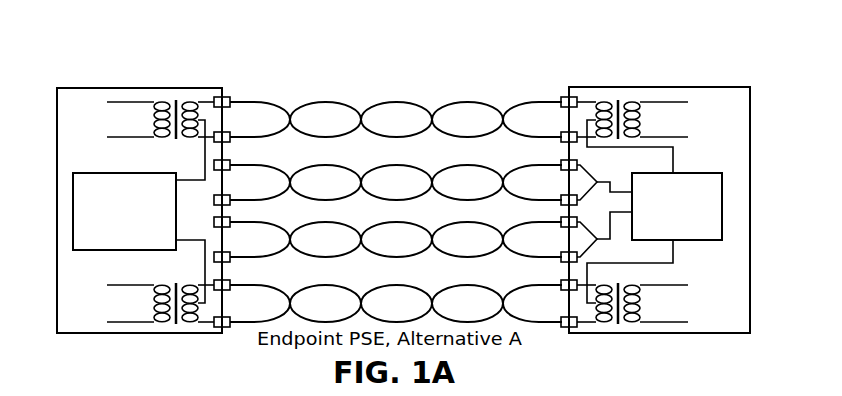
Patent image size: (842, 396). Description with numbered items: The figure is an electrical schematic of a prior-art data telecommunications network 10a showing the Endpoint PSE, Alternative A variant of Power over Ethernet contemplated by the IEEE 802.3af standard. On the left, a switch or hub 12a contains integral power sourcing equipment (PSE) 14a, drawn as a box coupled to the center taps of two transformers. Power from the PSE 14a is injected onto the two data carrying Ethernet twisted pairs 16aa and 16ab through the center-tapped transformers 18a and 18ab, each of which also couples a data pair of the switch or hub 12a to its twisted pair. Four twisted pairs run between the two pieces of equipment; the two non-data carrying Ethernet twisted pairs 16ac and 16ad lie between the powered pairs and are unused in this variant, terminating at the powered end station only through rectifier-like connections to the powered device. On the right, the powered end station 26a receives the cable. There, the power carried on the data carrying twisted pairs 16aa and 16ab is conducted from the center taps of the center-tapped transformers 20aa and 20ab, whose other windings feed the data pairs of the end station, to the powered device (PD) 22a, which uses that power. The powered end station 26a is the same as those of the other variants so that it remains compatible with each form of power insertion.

The data telecommunications network 10a is at (467, 57).
The switch or hub 12a is at (183, 88).
The power sourcing equipment (PSE) 14a is at (73, 229).
The data carrying Ethernet twisted pair 16aa is at (358, 92).
The data carrying Ethernet twisted pair 16ab is at (360, 276).
The non-data carrying Ethernet twisted pair 16ac is at (363, 160).
The non-data carrying Ethernet twisted pair 16ad is at (360, 218).
The center-tapped transformer 18a is at (163, 99).
The center-tapped transformer 18ab is at (190, 323).
The center-tapped transformer 20aa is at (598, 100).
The center-tapped transformer 20ab is at (606, 324).
The powered device (PD) 22a is at (722, 223).
The powered end station 26a is at (735, 333).